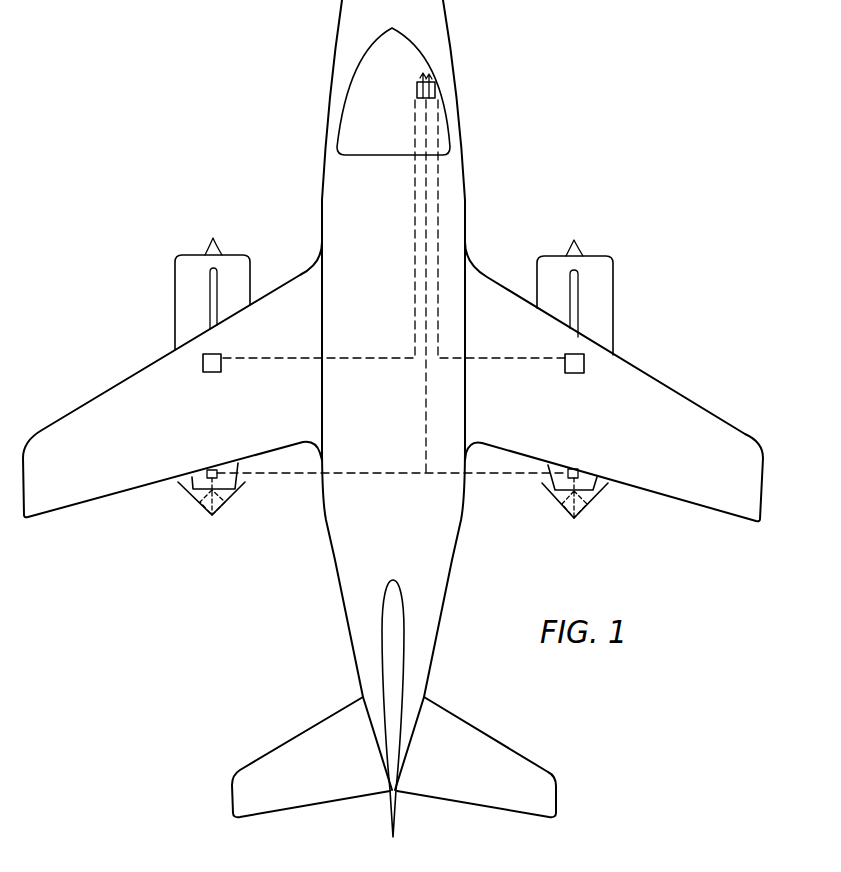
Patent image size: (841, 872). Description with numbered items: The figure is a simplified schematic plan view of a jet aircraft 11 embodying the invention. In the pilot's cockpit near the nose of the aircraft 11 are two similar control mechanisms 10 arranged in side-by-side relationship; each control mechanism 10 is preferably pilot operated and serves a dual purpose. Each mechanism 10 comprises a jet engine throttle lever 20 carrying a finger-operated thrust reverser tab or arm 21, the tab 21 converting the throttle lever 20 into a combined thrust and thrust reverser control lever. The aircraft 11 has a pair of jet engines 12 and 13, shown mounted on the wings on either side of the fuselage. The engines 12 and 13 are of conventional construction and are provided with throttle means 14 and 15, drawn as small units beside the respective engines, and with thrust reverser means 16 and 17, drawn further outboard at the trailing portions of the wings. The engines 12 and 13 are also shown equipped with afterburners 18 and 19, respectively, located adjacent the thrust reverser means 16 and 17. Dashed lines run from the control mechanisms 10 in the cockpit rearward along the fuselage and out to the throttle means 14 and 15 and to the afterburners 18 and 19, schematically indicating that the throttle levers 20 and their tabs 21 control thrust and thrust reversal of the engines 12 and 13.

The control mechanism 10 is at (436, 89).
The jet aircraft 11 is at (467, 202).
The jet engine 12 is at (182, 284).
The jet engine 13 is at (613, 280).
The throttle means 14 is at (203, 363).
The throttle means 15 is at (585, 363).
The thrust reverser means 16 is at (200, 503).
The thrust reverser means 17 is at (600, 490).
The afterburner 18 is at (240, 479).
The afterburner 19 is at (548, 476).
The jet engine throttle lever 20 is at (430, 78).
The thrust reverser tab 21 is at (424, 75).